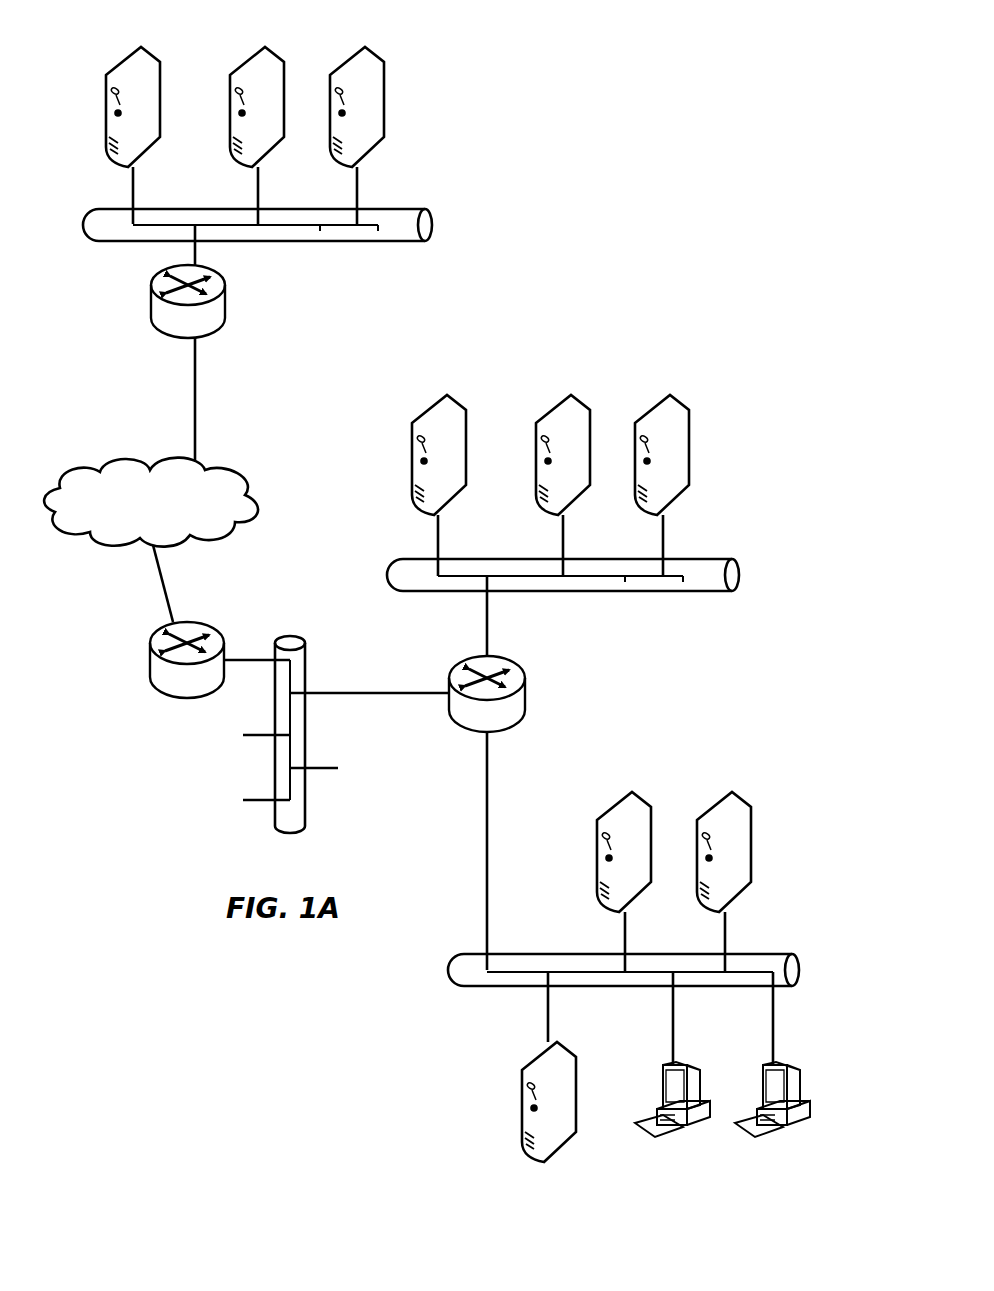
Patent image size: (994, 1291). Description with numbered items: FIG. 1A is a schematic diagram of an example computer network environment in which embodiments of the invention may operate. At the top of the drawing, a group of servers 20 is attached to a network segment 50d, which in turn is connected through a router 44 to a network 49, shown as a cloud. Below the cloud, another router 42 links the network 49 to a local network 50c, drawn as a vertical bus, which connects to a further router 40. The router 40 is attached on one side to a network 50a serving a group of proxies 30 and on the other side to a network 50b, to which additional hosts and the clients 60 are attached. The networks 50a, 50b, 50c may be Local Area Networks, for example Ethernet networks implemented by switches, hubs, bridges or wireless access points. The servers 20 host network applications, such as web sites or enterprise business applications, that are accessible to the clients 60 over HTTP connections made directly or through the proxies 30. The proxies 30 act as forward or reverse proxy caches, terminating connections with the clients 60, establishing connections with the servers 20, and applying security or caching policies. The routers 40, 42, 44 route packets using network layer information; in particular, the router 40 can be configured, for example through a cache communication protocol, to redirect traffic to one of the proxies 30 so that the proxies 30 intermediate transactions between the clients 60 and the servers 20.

The servers 20 is at (107, 105).
The proxies 30 is at (412, 455).
The router 40 is at (523, 700).
The router 42 is at (215, 628).
The router 44 is at (148, 317).
The network 49 is at (257, 487).
The network 50a is at (740, 576).
The network 50b is at (800, 970).
The network 50c is at (290, 635).
The network segment 50d is at (433, 225).
The clients 60 is at (655, 1098).